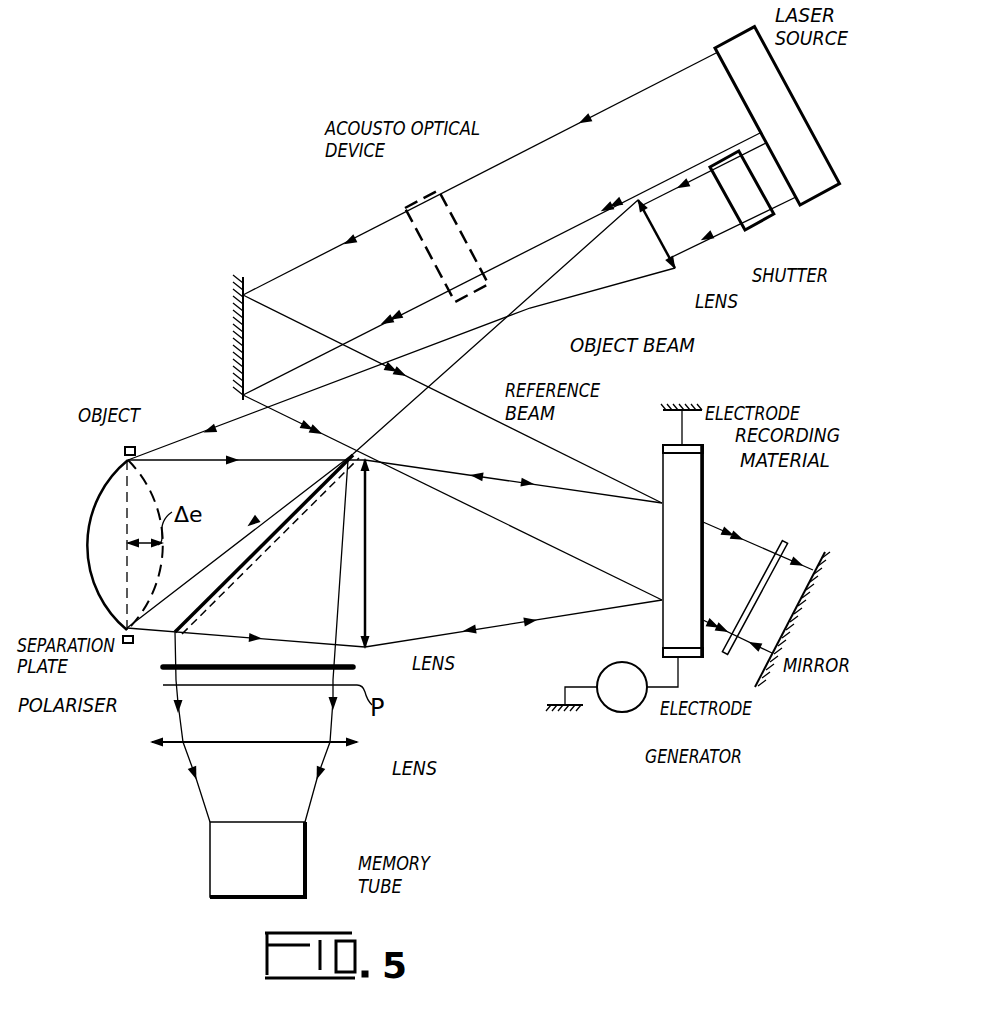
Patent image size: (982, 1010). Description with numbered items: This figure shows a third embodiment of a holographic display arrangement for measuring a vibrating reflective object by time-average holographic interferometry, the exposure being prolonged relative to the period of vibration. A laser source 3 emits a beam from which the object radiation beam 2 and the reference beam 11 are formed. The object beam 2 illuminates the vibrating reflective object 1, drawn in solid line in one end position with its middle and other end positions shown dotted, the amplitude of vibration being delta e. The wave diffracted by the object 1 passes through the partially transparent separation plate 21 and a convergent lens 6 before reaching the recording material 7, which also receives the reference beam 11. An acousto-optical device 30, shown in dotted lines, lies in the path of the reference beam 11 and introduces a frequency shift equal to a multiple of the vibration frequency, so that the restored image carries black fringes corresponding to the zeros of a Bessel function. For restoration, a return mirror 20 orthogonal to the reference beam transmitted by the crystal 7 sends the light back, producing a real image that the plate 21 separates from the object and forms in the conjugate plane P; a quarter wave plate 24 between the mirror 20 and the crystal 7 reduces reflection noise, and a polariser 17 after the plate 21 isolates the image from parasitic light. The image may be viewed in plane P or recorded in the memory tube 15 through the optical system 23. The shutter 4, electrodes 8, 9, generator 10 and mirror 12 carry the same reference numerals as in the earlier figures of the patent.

The vibrating reflective object 1 is at (125, 460).
The object radiation beam 2 is at (572, 297).
The source 3 is at (793, 90).
The shutter 4 is at (748, 230).
The convergent lens 6 is at (678, 270).
The recording material 7 is at (777, 473).
The electrode 8 is at (703, 446).
The electrode 9 is at (700, 660).
The generator 10 is at (623, 712).
The reference beam 11 is at (458, 403).
The mirror 12 is at (241, 300).
The memory tube 15 is at (306, 870).
The polariser 17 is at (163, 669).
The return mirror 20 is at (757, 692).
The separation plate 21 is at (174, 634).
The optical system 23 is at (357, 745).
The quarter wave plate 24 is at (784, 538).
The acousto-optical device 30 is at (440, 188).